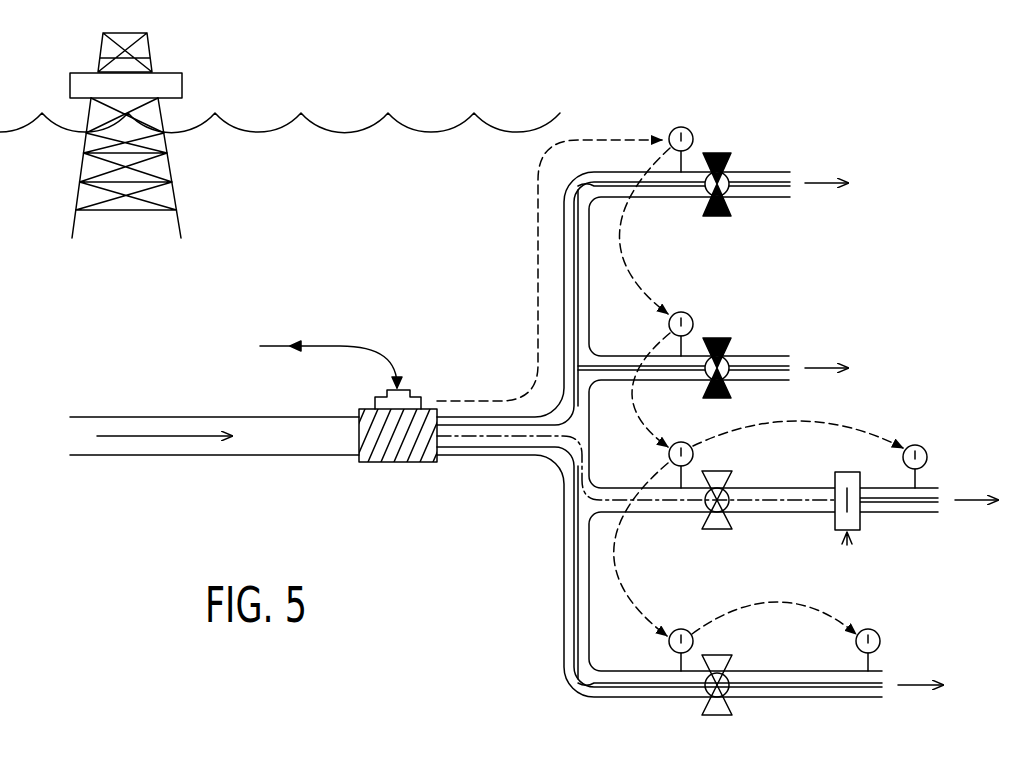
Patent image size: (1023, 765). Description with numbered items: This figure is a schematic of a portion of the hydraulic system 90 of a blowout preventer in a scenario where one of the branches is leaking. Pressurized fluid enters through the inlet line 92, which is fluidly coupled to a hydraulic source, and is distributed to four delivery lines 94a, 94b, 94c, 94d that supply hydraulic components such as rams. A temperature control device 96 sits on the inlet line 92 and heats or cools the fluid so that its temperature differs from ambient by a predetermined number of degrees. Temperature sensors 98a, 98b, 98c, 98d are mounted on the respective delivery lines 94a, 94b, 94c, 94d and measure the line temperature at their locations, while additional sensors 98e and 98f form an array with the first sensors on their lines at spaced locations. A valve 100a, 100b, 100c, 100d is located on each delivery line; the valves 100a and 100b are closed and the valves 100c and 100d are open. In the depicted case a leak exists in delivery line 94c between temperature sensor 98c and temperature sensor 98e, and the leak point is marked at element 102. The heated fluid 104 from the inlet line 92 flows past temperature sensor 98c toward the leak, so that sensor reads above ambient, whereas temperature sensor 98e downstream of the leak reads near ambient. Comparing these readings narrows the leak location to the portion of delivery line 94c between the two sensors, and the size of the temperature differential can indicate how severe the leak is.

The hydraulic system 90 is at (810, 40).
The inlet line 92 is at (170, 457).
The delivery line 94a is at (765, 198).
The delivery line 94b is at (765, 381).
The delivery line 94c is at (912, 514).
The delivery line 94d is at (860, 698).
The temperature control device 96 is at (367, 408).
The temperature sensor 98a is at (688, 128).
The temperature sensor 98b is at (690, 313).
The temperature sensor 98c is at (679, 442).
The temperature sensor 98d is at (676, 630).
The temperature sensor 98e is at (926, 449).
The temperature sensor 98f is at (880, 632).
The valve 100a is at (722, 153).
The valve 100b is at (722, 338).
The valve 100c is at (720, 471).
The valve 100d is at (720, 655).
The injection point 102 is at (862, 522).
The heated fluid 104 is at (507, 433).